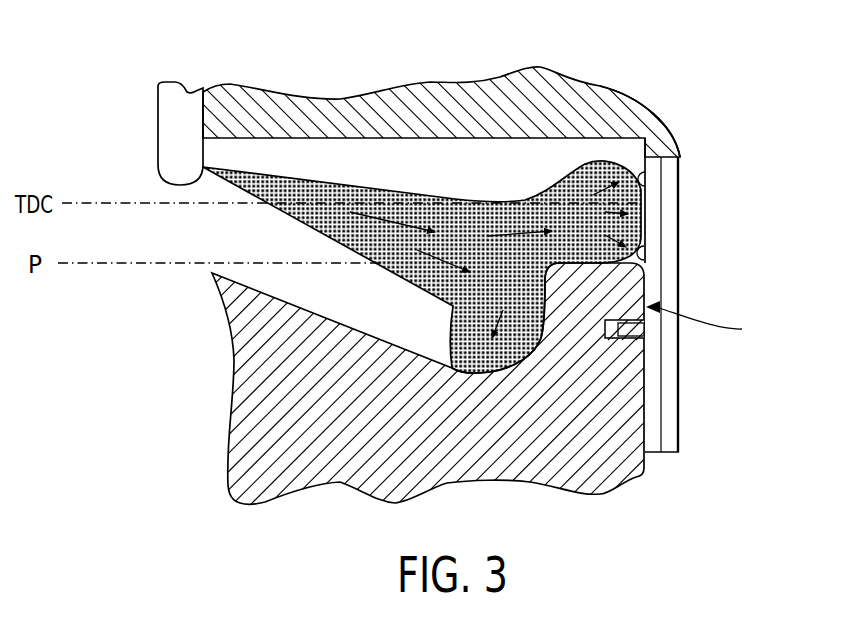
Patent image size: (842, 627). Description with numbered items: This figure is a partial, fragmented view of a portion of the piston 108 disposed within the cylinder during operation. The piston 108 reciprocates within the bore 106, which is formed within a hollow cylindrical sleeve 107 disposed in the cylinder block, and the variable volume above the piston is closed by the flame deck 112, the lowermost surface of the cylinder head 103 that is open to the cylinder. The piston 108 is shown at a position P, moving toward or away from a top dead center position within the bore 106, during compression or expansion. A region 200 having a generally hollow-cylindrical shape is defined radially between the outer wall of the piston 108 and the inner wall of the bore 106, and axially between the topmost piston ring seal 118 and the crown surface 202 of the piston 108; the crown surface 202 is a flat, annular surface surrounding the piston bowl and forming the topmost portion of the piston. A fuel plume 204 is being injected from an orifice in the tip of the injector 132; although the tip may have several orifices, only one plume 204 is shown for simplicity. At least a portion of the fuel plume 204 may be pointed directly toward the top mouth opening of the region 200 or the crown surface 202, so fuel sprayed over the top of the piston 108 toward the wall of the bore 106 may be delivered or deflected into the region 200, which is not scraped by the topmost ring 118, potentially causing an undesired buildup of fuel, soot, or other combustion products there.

The cylinder head 103 is at (650, 126).
The bore 106 is at (647, 186).
The hollow cylindrical sleeve 107 is at (667, 383).
The piston 108 is at (610, 478).
The flame deck 112 is at (445, 140).
The topmost piston ring seal 118 is at (620, 338).
The injector 132 is at (180, 127).
The region 200 is at (712, 321).
The crown surface 202 is at (645, 247).
The fuel plume 204 is at (600, 164).